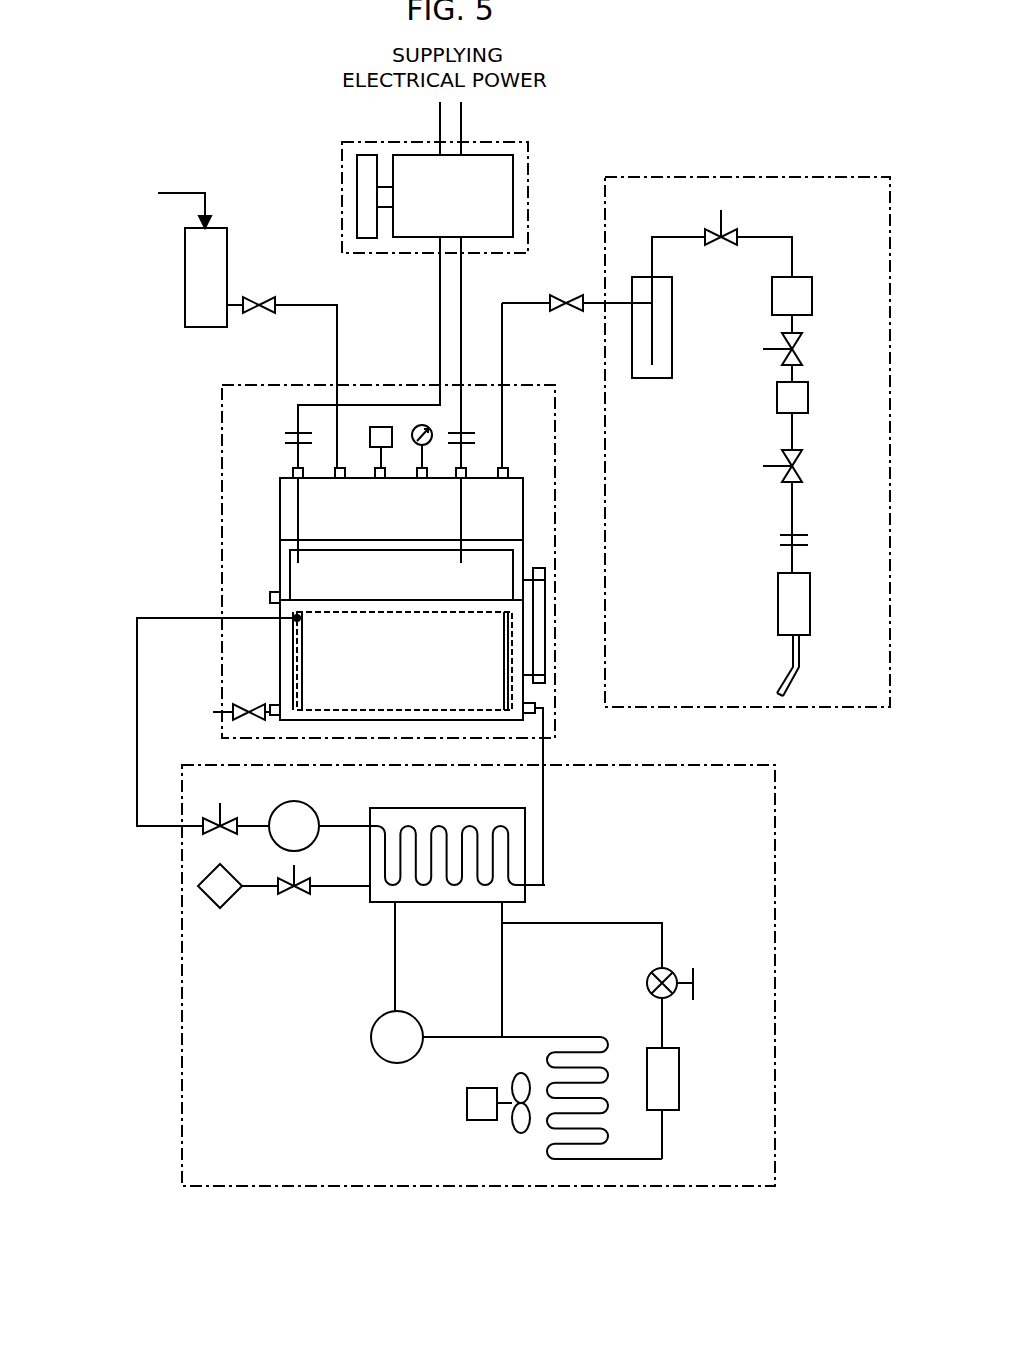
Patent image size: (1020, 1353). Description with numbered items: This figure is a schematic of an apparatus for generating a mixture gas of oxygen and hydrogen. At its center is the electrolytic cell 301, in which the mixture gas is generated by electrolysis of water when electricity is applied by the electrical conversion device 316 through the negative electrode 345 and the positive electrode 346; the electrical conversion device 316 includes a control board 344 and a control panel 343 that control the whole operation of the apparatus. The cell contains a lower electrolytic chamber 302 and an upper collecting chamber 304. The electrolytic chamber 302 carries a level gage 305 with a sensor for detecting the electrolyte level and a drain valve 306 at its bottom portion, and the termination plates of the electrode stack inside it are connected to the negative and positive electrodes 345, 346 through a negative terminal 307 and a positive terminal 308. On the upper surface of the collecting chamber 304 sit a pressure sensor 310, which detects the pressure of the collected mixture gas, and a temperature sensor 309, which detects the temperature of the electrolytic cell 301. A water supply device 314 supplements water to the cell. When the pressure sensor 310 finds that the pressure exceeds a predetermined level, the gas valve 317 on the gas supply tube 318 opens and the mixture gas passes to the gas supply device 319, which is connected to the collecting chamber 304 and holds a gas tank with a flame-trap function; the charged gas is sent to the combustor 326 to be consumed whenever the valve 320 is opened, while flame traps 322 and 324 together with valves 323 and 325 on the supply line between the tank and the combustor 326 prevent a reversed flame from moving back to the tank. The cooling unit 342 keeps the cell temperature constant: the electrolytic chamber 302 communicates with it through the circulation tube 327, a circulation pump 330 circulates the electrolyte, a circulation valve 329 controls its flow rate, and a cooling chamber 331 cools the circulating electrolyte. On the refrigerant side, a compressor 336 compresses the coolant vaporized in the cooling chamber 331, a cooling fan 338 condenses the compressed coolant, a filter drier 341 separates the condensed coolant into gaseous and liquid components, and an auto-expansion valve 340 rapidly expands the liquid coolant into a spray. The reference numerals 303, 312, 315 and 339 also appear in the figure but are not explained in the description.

The electrolytic cell 301 is at (222, 458).
The electrolytic chamber 302 is at (392, 672).
The intermediate chamber 303 is at (392, 575).
The collecting chamber 304 is at (392, 519).
The level gage 305 is at (538, 620).
The drain valve 306 is at (218, 713).
The negative terminal 307 is at (517, 563).
The positive terminal 308 is at (290, 550).
The temperature sensor 309 is at (378, 467).
The pressure sensor 310 is at (422, 425).
The water supply valve 312 is at (259, 297).
The water supply device 314 is at (225, 228).
The water supply 315 is at (108, 180).
The electrical conversion device 316 is at (528, 180).
The gas valve 317 is at (574, 307).
The gas supply tube 318 is at (522, 303).
The gas supply device 319 is at (825, 177).
The valve 320 is at (735, 228).
The flame trap 322 is at (812, 277).
The valve 323 is at (795, 349).
The flame trap 324 is at (808, 405).
The valve 325 is at (800, 470).
The combustor 326 is at (810, 603).
The circulation tube 327 is at (135, 640).
The circulation valve 329 is at (203, 835).
The circulation pump 330 is at (312, 806).
The cooling chamber 331 is at (470, 808).
The compressor 336 is at (372, 1040).
The cooling fan 338 is at (467, 1105).
The condenser coil 339 is at (577, 1160).
The auto-expansion valve 340 is at (672, 972).
The filter drier 341 is at (679, 1078).
The cooling unit 342 is at (775, 976).
The control panel 343 is at (372, 155).
The control board 344 is at (483, 155).
The negative electrode 345 is at (463, 503).
The positive electrode 346 is at (280, 505).